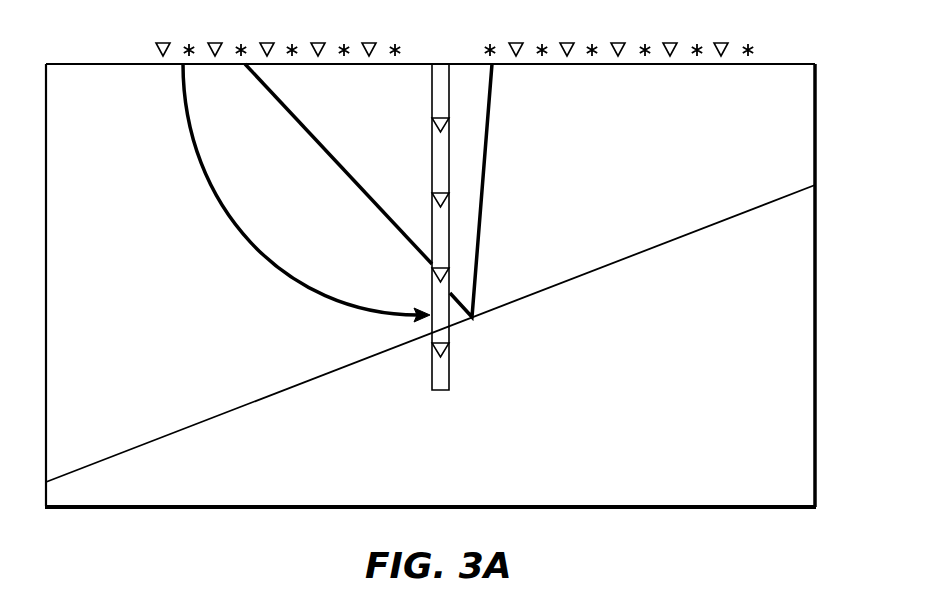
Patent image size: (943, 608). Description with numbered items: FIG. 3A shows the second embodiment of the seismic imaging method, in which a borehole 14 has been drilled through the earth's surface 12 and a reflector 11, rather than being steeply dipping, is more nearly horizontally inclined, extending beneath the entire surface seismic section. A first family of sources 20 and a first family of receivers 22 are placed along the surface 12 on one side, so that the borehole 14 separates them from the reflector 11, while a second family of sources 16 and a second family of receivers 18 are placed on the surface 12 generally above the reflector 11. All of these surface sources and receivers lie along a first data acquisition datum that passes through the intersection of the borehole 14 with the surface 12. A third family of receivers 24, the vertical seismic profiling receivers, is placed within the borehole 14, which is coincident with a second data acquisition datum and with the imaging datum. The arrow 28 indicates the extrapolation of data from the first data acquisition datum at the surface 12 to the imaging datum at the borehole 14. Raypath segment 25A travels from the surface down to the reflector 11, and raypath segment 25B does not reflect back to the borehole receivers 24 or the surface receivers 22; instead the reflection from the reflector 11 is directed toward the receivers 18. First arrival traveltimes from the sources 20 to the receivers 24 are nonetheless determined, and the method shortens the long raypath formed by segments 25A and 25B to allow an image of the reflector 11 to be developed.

The reflector 11 is at (573, 279).
The earth's surface 12 is at (789, 64).
The borehole 14 is at (437, 391).
The second family of sources 16 is at (592, 44).
The second family of receivers 18 is at (618, 57).
The first family of sources 20 is at (293, 44).
The first family of receivers 22 is at (267, 42).
The third family of receivers 24 is at (432, 125).
The raypath segment 25A is at (313, 138).
The raypath segment 25B is at (487, 147).
The arrow 28 is at (301, 283).